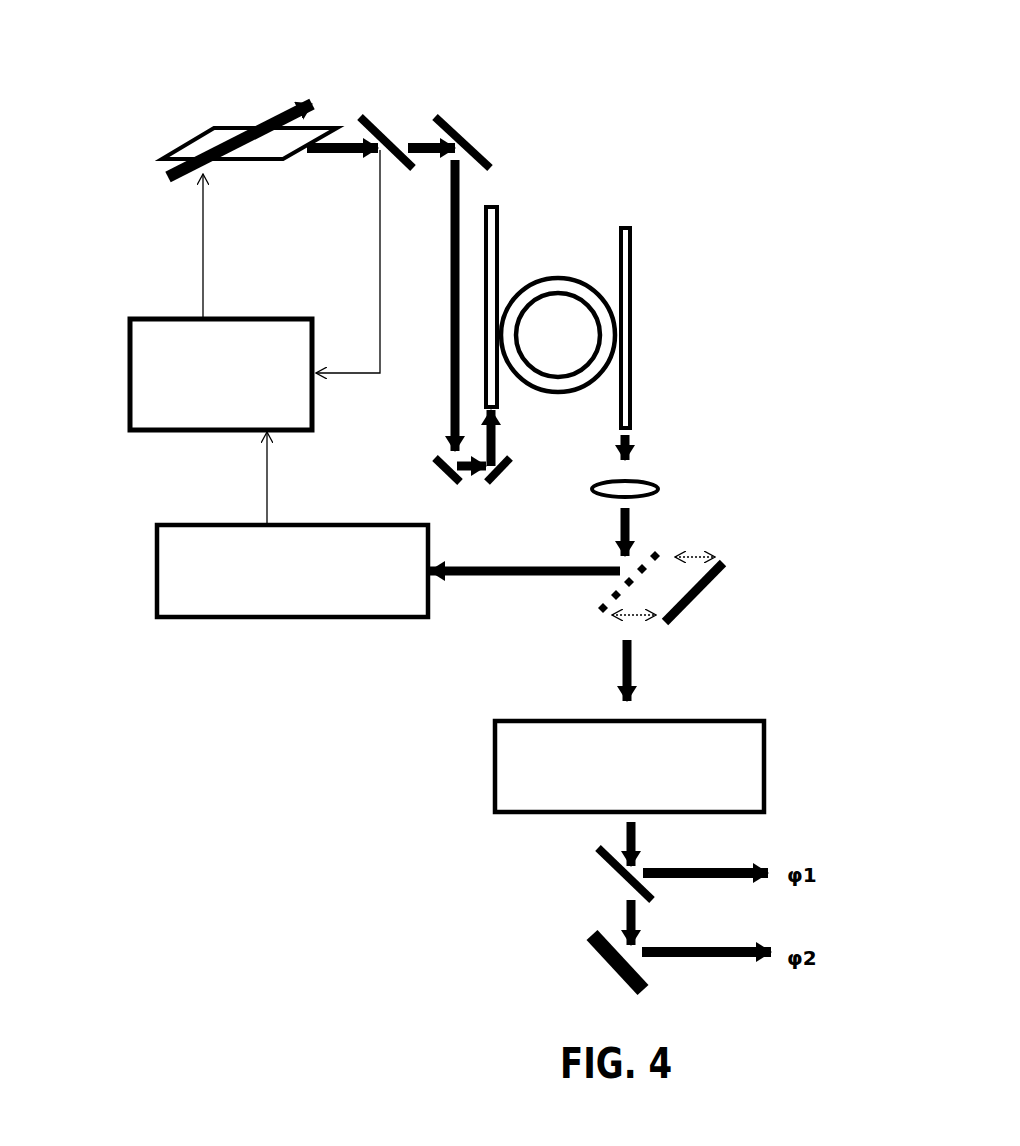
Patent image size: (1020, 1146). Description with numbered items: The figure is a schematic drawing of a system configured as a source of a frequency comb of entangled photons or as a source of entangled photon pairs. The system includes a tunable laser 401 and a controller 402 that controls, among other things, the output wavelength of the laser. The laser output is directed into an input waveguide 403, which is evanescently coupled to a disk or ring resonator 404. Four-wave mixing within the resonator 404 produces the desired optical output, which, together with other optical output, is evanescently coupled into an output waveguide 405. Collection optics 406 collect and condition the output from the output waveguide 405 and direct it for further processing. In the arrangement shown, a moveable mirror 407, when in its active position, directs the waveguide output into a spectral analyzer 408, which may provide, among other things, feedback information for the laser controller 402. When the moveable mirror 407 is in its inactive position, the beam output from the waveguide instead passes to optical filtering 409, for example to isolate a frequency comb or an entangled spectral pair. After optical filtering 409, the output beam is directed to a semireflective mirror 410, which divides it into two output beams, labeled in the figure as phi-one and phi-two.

The tunable laser 401 is at (325, 117).
The controller 402 is at (128, 330).
The input waveguide 403 is at (497, 232).
The disk or ring resonator 404 is at (605, 290).
The output waveguide 405 is at (637, 348).
The collection optics 406 is at (657, 477).
The moveable mirror 407 is at (733, 555).
The spectral analyzer 408 is at (152, 567).
The optical filtering 409 is at (710, 712).
The semireflective mirror 410 is at (600, 868).